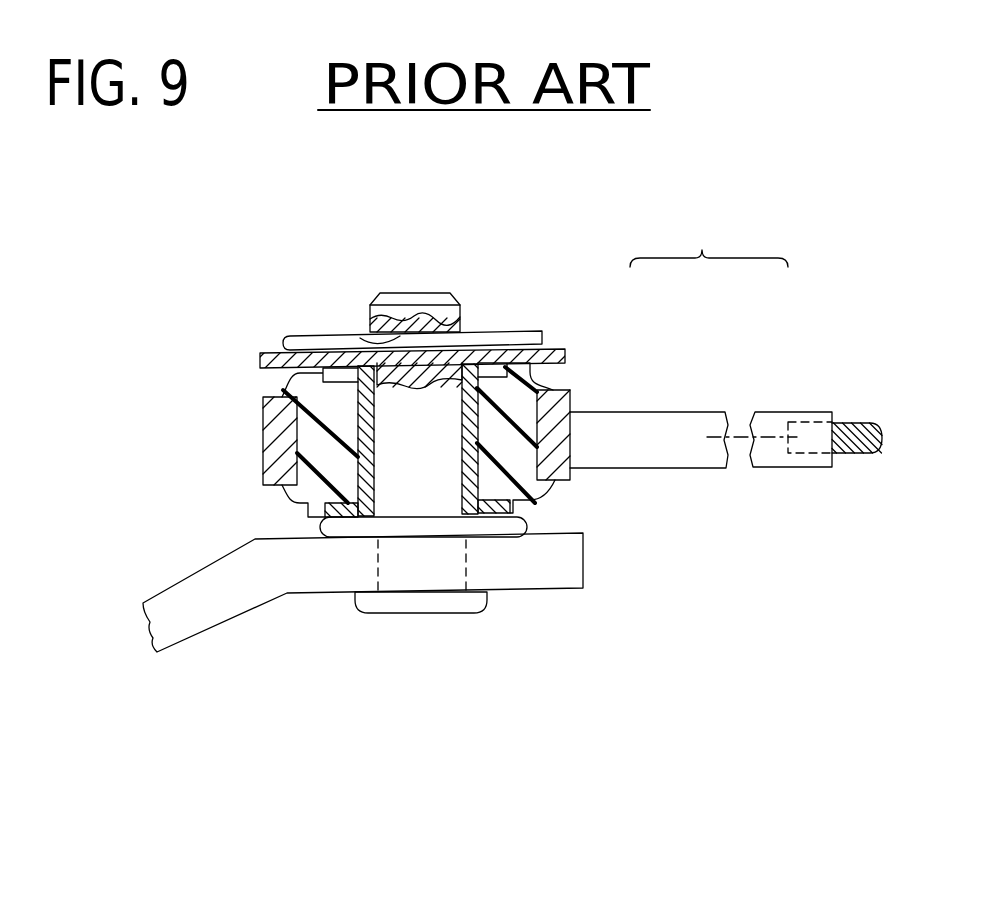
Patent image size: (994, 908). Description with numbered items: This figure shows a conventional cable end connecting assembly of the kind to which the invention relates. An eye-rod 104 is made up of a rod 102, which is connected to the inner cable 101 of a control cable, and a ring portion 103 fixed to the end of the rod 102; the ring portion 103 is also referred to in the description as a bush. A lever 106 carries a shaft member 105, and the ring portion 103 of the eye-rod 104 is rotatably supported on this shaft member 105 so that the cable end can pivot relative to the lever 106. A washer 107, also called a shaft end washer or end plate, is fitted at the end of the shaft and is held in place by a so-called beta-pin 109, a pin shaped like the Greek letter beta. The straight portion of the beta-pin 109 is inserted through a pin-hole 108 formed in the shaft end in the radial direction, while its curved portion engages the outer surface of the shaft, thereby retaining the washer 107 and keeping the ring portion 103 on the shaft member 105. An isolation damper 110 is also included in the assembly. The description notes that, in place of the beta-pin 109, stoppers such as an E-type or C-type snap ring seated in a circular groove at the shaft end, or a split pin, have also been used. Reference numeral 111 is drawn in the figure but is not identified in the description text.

The inner cable 101 is at (855, 423).
The rod 102 is at (690, 432).
The ring portion 103 is at (590, 392).
The eye-rod 104 is at (709, 244).
The shaft member 105 is at (425, 307).
The lever 106 is at (288, 572).
The washer 107 is at (275, 353).
The pin-hole 108 is at (360, 337).
The beta-pin 109 is at (320, 340).
The isolation damper 110 is at (543, 487).
The collar sleeve 111 is at (463, 472).